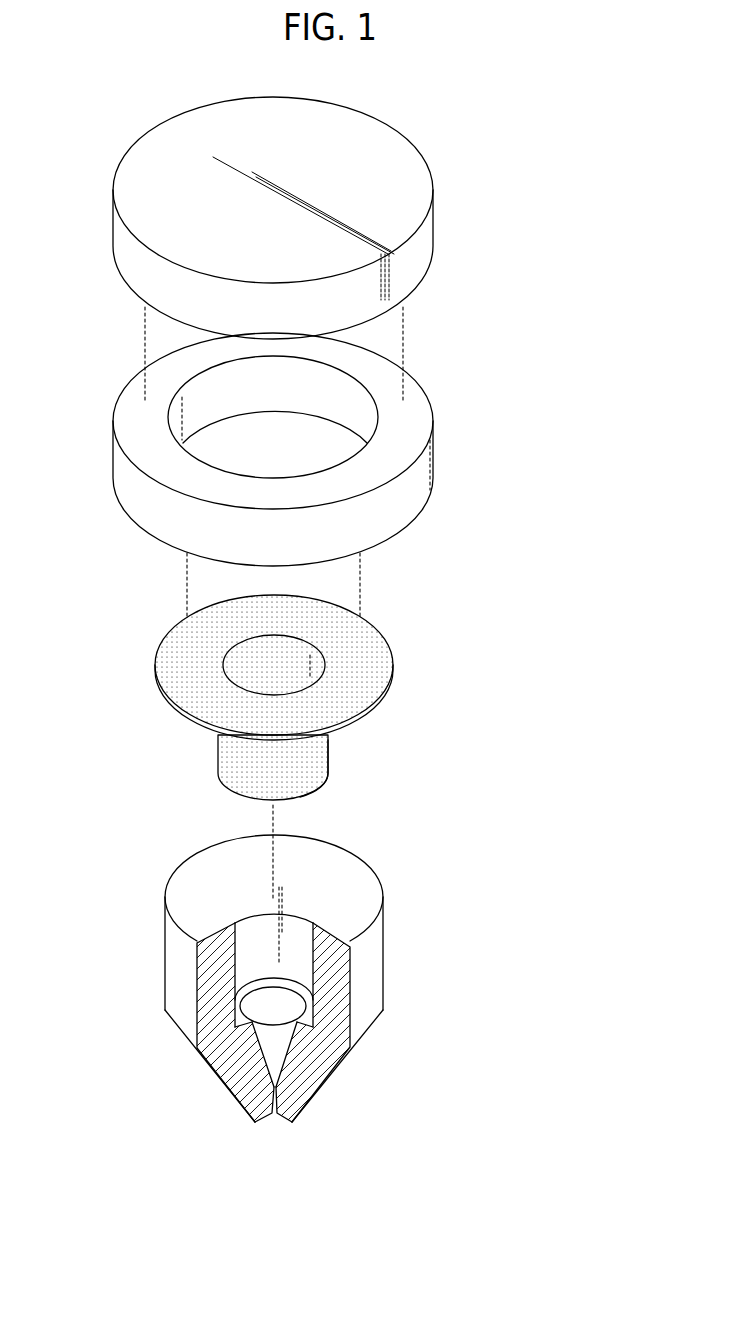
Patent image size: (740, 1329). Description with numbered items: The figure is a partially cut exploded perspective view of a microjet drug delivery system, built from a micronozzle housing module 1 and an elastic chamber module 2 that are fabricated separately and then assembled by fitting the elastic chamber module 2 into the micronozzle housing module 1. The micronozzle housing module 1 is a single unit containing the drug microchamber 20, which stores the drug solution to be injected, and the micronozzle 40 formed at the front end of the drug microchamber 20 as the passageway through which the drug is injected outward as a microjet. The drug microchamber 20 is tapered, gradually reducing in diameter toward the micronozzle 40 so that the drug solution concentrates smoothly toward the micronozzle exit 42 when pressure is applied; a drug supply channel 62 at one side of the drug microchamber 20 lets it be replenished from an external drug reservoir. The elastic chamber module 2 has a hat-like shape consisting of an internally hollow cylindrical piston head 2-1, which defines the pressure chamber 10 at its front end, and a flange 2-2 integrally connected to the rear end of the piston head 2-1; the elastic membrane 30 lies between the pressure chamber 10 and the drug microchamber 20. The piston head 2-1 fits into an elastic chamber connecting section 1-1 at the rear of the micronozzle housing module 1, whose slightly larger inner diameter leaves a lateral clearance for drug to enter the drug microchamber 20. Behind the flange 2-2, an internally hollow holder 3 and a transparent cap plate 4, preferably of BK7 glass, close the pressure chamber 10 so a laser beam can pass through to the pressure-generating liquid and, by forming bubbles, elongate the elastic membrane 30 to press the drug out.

The micronozzle housing module 1 is at (330, 1023).
The elastic chamber connecting section 1-1 is at (308, 950).
The elastic chamber module 2 is at (312, 666).
The piston head 2-1 is at (284, 767).
The flange 2-2 is at (178, 672).
The holder 3 is at (448, 423).
The cap plate 4 is at (443, 222).
The pressure chamber 10 is at (277, 681).
The drug microchamber 20 is at (270, 1049).
The elastic membrane 30 is at (330, 752).
The micronozzle 40 is at (313, 1068).
The micronozzle exit 42 is at (244, 1106).
The drug supply channel 62 is at (305, 1002).